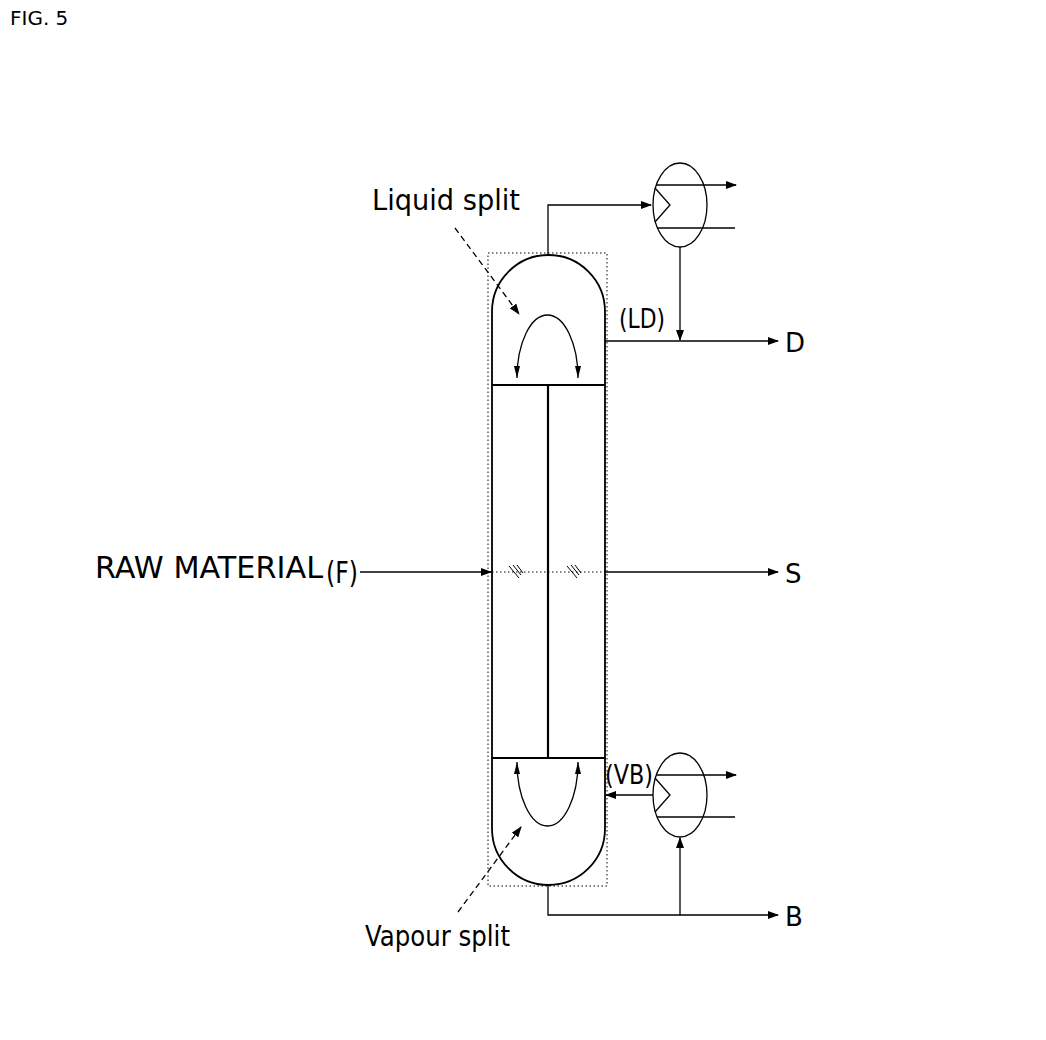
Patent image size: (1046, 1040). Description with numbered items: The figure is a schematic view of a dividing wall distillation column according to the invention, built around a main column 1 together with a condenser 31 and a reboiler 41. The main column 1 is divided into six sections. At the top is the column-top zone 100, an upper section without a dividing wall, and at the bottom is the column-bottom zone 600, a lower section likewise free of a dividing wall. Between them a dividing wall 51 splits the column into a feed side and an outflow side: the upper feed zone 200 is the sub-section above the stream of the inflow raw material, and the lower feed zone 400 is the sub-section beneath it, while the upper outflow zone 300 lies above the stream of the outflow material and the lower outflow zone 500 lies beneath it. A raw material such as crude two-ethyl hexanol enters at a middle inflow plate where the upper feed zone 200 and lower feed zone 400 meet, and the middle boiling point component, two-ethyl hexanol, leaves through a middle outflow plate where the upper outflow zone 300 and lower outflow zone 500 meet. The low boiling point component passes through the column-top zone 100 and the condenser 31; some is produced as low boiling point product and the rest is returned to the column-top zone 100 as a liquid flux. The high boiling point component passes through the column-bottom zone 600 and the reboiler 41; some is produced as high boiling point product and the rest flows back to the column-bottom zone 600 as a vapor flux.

The main column 1 is at (477, 420).
The condenser 31 is at (680, 163).
The reboiler 41 is at (680, 752).
The dividing wall 51 is at (550, 447).
The column-top zone 100 is at (547, 328).
The upper feed zone 200 is at (518, 526).
The upper outflow zone 300 is at (578, 526).
The lower feed zone 400 is at (520, 689).
The lower outflow zone 500 is at (576, 689).
The column-bottom zone 600 is at (547, 816).